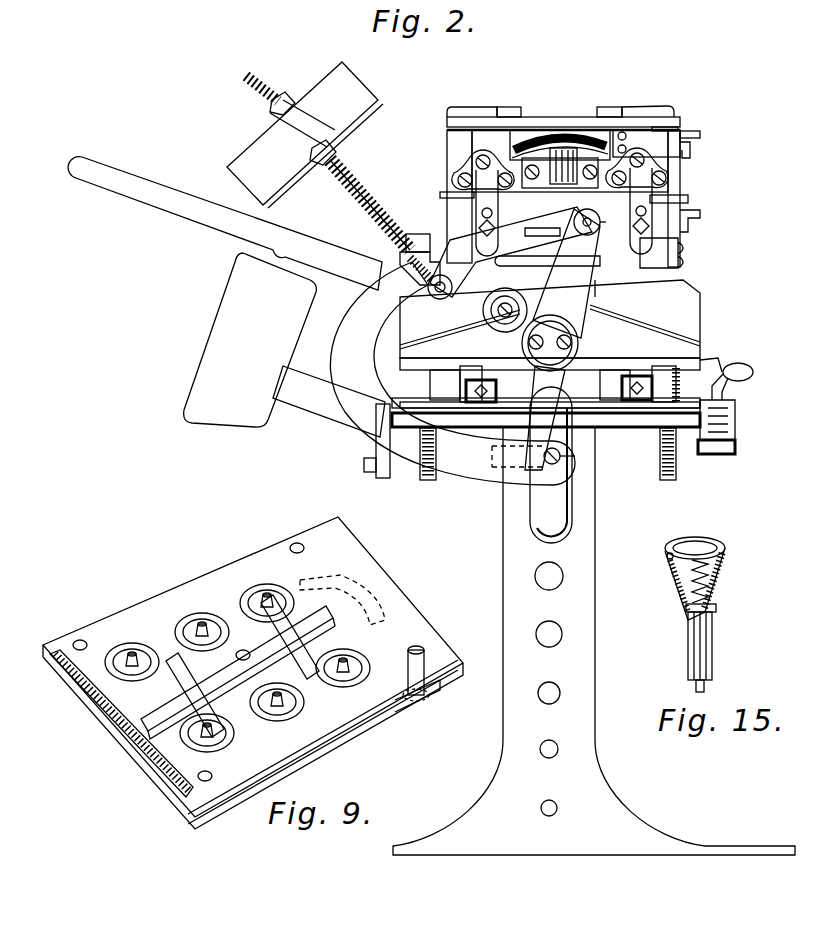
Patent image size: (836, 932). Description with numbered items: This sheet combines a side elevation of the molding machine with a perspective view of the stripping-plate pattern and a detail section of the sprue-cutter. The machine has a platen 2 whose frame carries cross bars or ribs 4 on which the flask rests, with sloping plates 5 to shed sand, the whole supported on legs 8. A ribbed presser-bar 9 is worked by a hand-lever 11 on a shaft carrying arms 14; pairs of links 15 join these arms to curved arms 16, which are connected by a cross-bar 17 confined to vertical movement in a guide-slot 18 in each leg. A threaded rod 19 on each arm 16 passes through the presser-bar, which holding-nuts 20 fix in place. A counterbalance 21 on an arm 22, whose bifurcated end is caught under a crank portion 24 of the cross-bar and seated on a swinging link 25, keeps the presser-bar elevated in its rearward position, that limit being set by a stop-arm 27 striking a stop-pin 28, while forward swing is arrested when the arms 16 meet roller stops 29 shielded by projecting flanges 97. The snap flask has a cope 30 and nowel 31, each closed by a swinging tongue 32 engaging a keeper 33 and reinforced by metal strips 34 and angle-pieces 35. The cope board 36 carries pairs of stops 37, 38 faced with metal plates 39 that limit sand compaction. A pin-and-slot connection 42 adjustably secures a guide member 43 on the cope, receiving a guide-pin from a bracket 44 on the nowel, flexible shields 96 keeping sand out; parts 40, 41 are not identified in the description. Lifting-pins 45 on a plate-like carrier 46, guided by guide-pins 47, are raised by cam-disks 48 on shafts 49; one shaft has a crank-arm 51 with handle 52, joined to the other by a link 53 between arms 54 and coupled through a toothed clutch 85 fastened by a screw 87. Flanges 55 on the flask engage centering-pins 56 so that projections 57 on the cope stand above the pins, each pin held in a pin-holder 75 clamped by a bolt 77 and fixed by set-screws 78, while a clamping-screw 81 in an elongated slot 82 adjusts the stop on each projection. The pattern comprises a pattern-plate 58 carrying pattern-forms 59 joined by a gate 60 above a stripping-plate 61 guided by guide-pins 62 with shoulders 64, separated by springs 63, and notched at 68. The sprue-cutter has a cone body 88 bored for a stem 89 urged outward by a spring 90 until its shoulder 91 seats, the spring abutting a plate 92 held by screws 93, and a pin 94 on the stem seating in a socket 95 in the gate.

In FIG. 2, the platen 2 is at (550, 319).
In FIG. 2, the cross bars or ribs 4 is at (637, 294).
In FIG. 2, the plate 5 is at (690, 340).
In FIG. 2, the legs 8 is at (594, 641).
In FIG. 2, the presser-bar 9 is at (305, 135).
In FIG. 2, the hand-lever 11 is at (132, 178).
In FIG. 2, the arms 14 is at (561, 339).
In FIG. 2, the links 15 is at (510, 253).
In FIG. 2, the curved arm 16 is at (452, 373).
In FIG. 2, the cross-bar 17 is at (550, 411).
In FIG. 2, the guide-slot 18 is at (560, 512).
In FIG. 2, the threaded rod 19 is at (364, 190).
In FIG. 2, the holding-nuts 20 is at (284, 100).
In FIG. 2, the counterbalance 21 is at (250, 340).
In FIG. 2, the arm 22 is at (329, 401).
In FIG. 2, the crank portion 24 is at (492, 470).
In FIG. 2, the swinging link 25 is at (454, 383).
In FIG. 2, the stop-arm 27 is at (496, 399).
In FIG. 2, the stop-pin 28 is at (578, 458).
In FIG. 2, the stops 29 is at (504, 325).
In FIG. 2, the cope 30 is at (455, 148).
In FIG. 2, the nowel 31 is at (692, 230).
In FIG. 2, the swinging tongue 32 is at (700, 135).
In FIG. 2, the keeper 33 is at (692, 151).
In FIG. 2, the metal strips 34 is at (486, 116).
In FIG. 2, the angle-pieces 35 is at (698, 261).
In FIG. 2, the cope board 36 is at (533, 116).
In FIG. 2, the projecting stops 37 is at (606, 106).
In FIG. 2, the projecting stops 38 is at (648, 106).
In FIG. 2, the metal plates 39 is at (678, 120).
In FIG. 2, the bar 40 is at (547, 262).
In FIG. 2, the pivot 41 is at (578, 228).
In FIG. 2, the pin-and-slot connection 42 is at (548, 180).
In FIG. 2, the member 43 is at (579, 163).
In FIG. 2, the bracket 44 is at (538, 228).
In FIG. 2, the lifting-pins 45 is at (466, 370).
In FIG. 2, the carrier 46 is at (460, 408).
In FIG. 2, the guide-pins 47 is at (704, 360).
In FIG. 2, the cam-disk 48 is at (543, 468).
In FIG. 2, the shaft 49 is at (622, 428).
In FIG. 2, the crank-arm 51 is at (726, 392).
In FIG. 2, the handle 52 is at (746, 368).
In FIG. 2, the link 53 is at (374, 447).
In FIG. 2, the arm 54 is at (370, 474).
In FIG. 2, the flanges 55 is at (428, 236).
In FIG. 2, the centering-pins 56 is at (412, 240).
In FIG. 2, the projections 57 is at (560, 202).
In FIG. 2, the pattern-plate 58 is at (447, 192).
In FIG. 9, the pattern-plate 58 is at (248, 776).
In FIG. 9, the pattern-forms 59 is at (272, 712).
In FIG. 9, the gate 60 is at (318, 620).
In FIG. 2, the stripping-plate 61 is at (690, 199).
In FIG. 9, the stripping-plate 61 is at (331, 758).
In FIG. 9, the guide-pins 62 is at (300, 546).
In FIG. 9, the springs 63 is at (95, 700).
In FIG. 9, the shoulders 64 is at (422, 700).
In FIG. 9, the notches 68 is at (365, 608).
In FIG. 2, the pin-holder 75 is at (664, 385).
In FIG. 2, the clamping screw or bolt 77 is at (666, 380).
In FIG. 2, the set-screws 78 is at (622, 384).
In FIG. 2, the clamping-screw 81 is at (484, 231).
In FIG. 2, the elongated slot 82 is at (610, 209).
In FIG. 2, the toothed clutch 85 is at (720, 455).
In FIG. 2, the screw 87 is at (736, 424).
In FIG. 15, the body or cone portion 88 is at (725, 566).
In FIG. 15, the stem 89 is at (712, 656).
In FIG. 15, the spring 90 is at (712, 594).
In FIG. 15, the shoulder 91 is at (716, 610).
In FIG. 15, the plate 92 is at (700, 545).
In FIG. 15, the screws 93 is at (668, 554).
In FIG. 15, the pin 94 is at (704, 686).
In FIG. 9, the socket 95 is at (250, 658).
In FIG. 2, the flexible shields 96 is at (567, 134).
In FIG. 2, the projecting flanges 97 is at (520, 300).